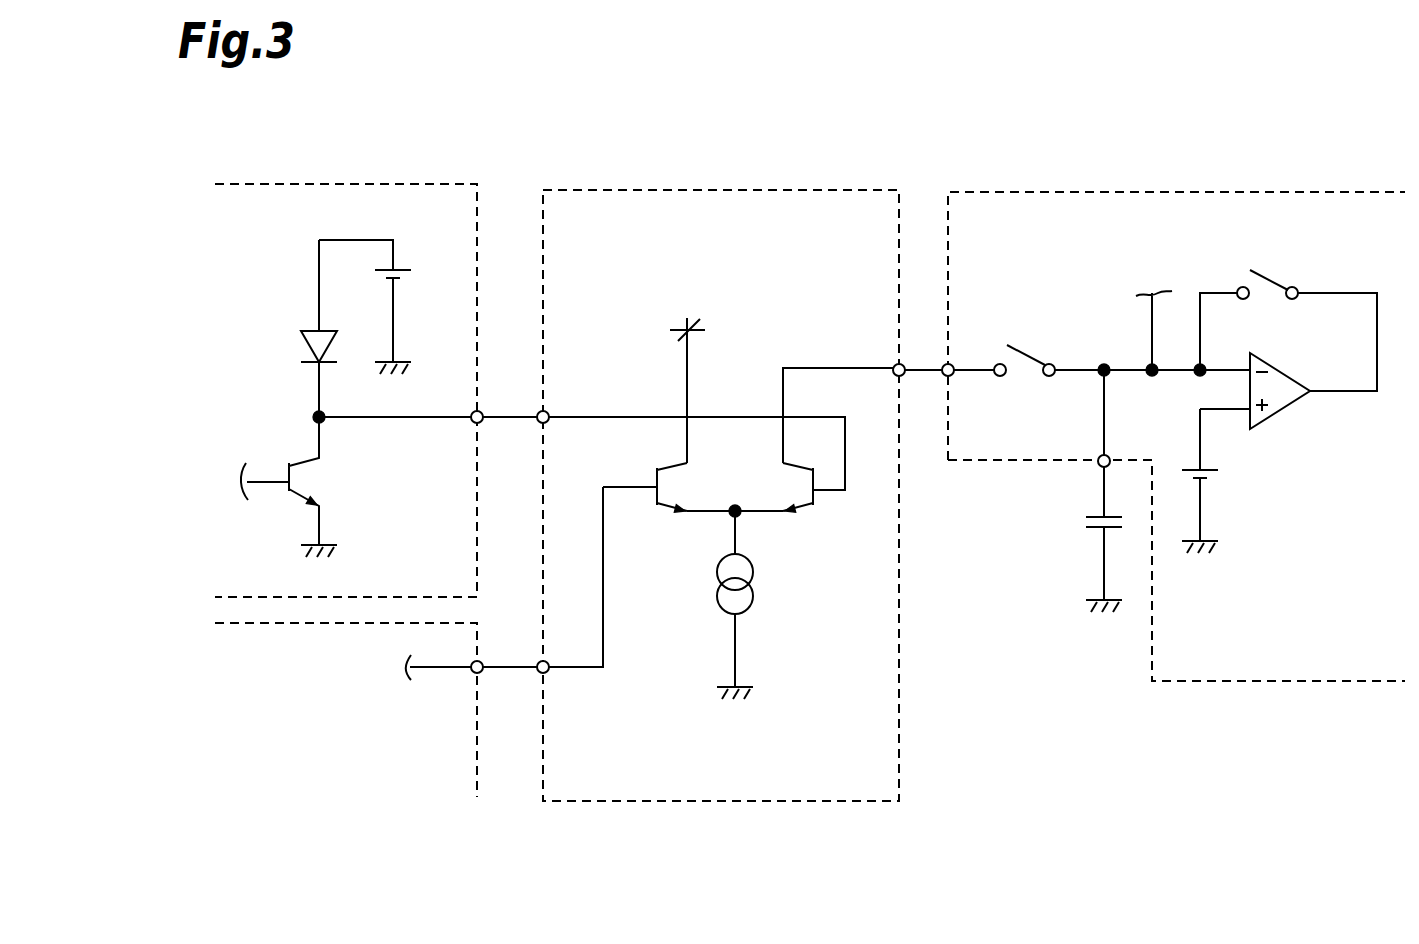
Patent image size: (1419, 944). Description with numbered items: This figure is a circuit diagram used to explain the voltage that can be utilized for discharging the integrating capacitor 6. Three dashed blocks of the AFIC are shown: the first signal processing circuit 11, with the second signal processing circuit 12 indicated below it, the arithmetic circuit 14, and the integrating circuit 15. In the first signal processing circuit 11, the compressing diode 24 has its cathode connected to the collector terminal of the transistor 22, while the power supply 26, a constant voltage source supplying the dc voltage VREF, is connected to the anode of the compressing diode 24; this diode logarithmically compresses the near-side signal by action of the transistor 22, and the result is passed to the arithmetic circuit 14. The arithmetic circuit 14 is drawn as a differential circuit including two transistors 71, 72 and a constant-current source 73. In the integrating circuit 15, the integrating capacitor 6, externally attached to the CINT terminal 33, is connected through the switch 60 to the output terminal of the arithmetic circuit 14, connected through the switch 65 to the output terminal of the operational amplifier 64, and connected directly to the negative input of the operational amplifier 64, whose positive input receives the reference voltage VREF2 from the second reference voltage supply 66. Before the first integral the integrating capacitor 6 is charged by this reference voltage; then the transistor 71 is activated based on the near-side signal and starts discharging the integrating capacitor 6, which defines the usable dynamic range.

The first signal processing circuit 11 is at (427, 184).
The second signal processing circuit 12 is at (477, 777).
The arithmetic circuit 14 is at (775, 190).
The integrating circuit 15 is at (1143, 192).
The transistor 22 is at (291, 496).
The compressing diode 24 is at (301, 346).
The power supply 26 is at (410, 270).
The integrating capacitor 6 is at (1094, 531).
The CINT terminal 33 is at (1097, 473).
The switch 60 is at (1035, 350).
The operational amplifier 64 is at (1293, 408).
The switch 65 is at (1283, 263).
The second reference voltage supply 66 is at (1218, 472).
The transistor 71 is at (812, 508).
The transistor 72 is at (658, 508).
The constant-current source 73 is at (752, 606).